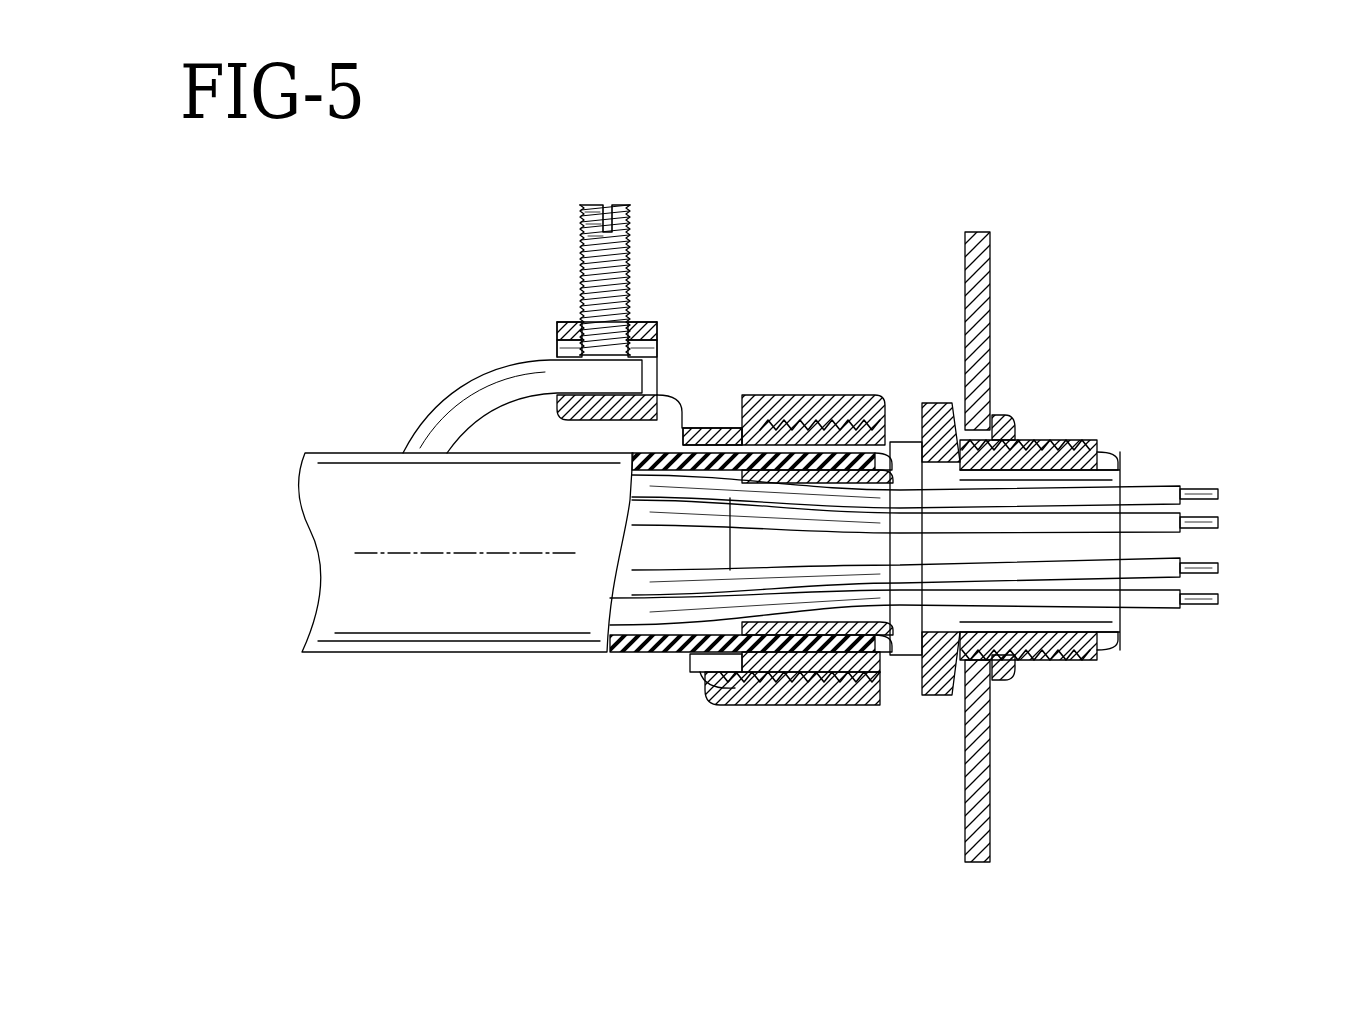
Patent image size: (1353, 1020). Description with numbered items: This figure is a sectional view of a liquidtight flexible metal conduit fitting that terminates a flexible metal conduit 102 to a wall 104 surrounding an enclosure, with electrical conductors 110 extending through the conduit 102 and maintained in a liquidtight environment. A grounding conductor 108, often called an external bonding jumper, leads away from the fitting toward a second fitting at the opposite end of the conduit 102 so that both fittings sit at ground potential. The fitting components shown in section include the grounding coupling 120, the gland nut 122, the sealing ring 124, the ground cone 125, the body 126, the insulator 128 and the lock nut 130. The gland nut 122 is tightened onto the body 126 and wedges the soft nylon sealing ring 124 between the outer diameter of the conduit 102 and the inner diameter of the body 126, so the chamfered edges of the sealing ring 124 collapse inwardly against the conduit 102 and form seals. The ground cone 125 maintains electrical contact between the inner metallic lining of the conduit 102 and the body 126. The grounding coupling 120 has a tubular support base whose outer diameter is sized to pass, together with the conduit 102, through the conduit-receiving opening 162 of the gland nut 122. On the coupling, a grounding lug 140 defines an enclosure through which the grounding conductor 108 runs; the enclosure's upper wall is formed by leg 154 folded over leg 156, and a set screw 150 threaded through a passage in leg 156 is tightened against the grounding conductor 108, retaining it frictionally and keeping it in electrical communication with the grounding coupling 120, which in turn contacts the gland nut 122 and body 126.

The flexible metal conduit 102 is at (370, 655).
The wall 104 is at (992, 296).
The grounding conductor 108 is at (442, 408).
The conductors 110 is at (1238, 482).
The grounding coupling 120 is at (677, 678).
The gland nut 122 is at (808, 706).
The sealing ring 124 is at (748, 398).
The ground cone 125 is at (897, 405).
The body 126 is at (915, 696).
The insulator 128 is at (1112, 652).
The lock nut 130 is at (1010, 682).
The grounding lug 140 is at (552, 322).
The set screw 150 is at (579, 211).
The leg 154 is at (655, 326).
The leg 156 is at (657, 342).
The conduit-receiving opening 162 is at (702, 672).